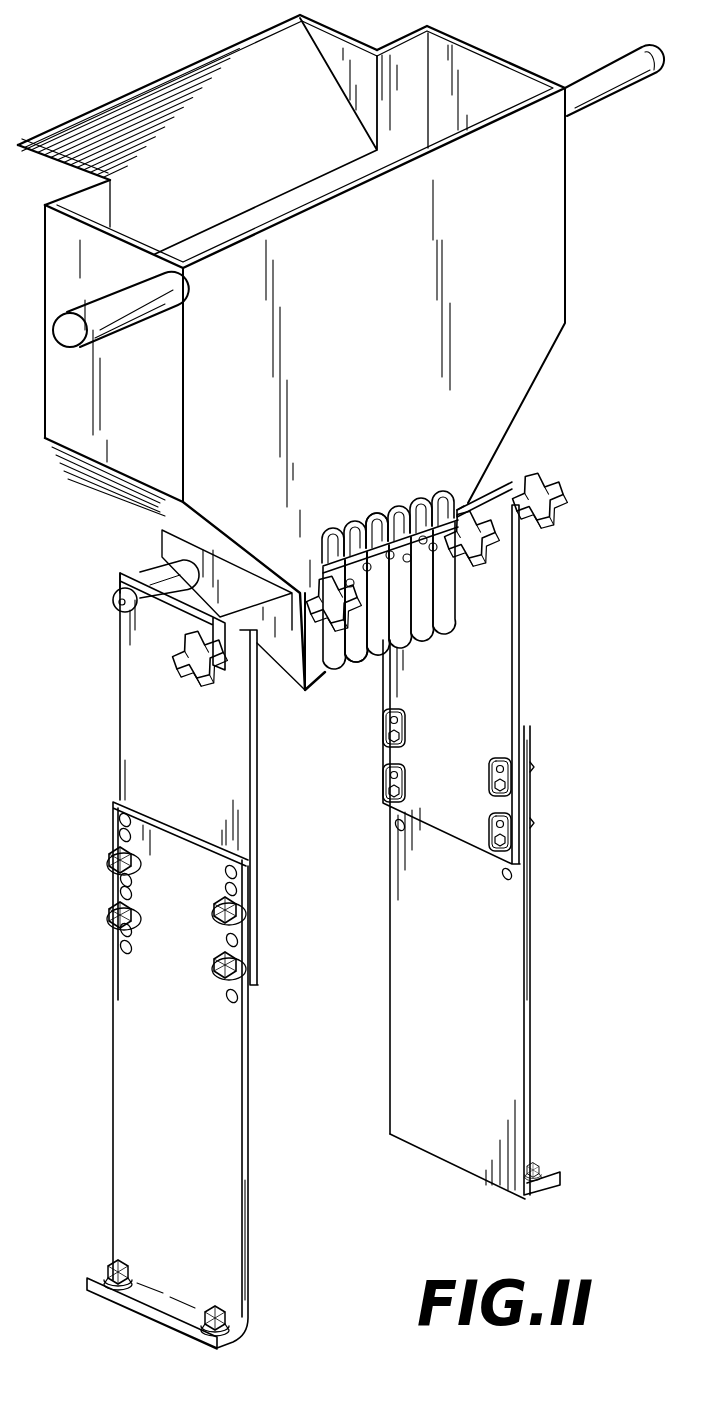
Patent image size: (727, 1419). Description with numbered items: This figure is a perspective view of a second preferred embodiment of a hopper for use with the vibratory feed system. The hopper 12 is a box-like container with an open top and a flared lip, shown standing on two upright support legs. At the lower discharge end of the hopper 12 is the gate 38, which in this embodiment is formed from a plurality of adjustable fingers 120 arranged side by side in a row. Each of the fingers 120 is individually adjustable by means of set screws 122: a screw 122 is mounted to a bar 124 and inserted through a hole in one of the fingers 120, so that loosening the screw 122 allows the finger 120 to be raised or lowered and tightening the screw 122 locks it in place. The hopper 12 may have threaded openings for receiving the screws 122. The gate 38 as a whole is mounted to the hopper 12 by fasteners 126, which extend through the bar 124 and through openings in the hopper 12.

The hopper 12 is at (404, 357).
The gate 38 is at (381, 587).
The adjustable fingers 120 is at (350, 652).
The set screws 122 is at (428, 503).
The bar 124 is at (367, 533).
The fasteners 126 is at (480, 537).